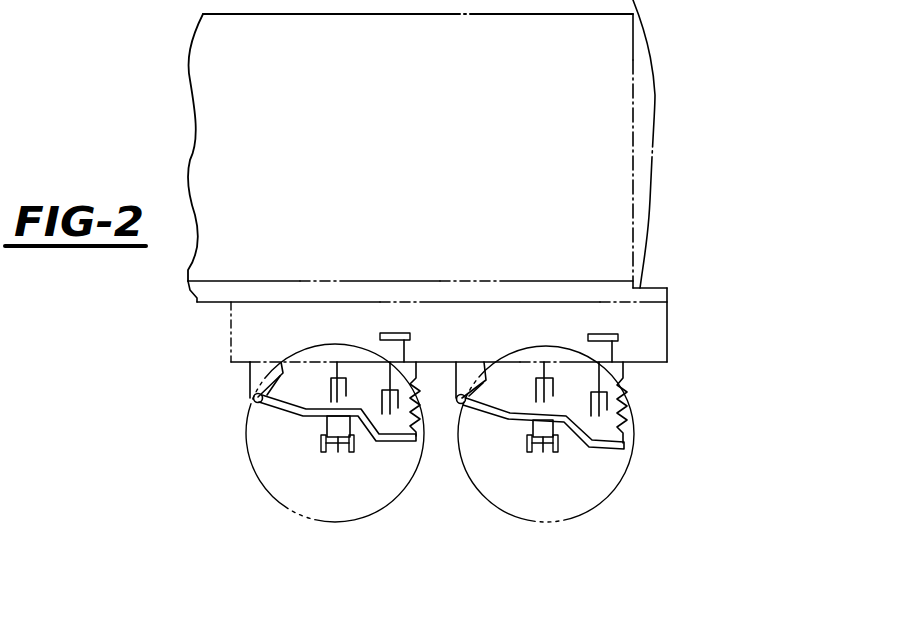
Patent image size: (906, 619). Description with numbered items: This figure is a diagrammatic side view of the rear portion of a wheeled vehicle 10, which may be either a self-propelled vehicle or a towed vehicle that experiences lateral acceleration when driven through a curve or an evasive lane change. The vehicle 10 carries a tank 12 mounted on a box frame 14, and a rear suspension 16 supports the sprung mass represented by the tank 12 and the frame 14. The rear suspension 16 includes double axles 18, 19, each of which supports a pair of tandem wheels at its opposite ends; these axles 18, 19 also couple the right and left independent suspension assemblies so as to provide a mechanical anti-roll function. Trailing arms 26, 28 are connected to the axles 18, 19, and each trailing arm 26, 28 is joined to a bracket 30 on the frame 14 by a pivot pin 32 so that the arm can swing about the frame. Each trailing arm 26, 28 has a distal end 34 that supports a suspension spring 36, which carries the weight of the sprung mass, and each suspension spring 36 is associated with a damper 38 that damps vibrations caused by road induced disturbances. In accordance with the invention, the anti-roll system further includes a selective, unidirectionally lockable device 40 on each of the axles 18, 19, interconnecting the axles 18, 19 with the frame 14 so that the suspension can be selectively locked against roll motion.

The wheeled vehicle 10 is at (644, 259).
The tank 12 is at (655, 97).
The box frame 14 is at (668, 326).
The rear suspension 16 is at (643, 448).
The axle 18 is at (340, 450).
The axle 19 is at (543, 452).
The trailing arm 26 is at (292, 407).
The trailing arm 28 is at (592, 450).
The bracket 30 is at (258, 372).
The pivot pin 32 is at (253, 402).
The distal end 34 is at (378, 460).
The suspension spring 36 is at (414, 383).
The damper 38 is at (372, 385).
The selective, unidirectionally lockable device 40 is at (323, 375).